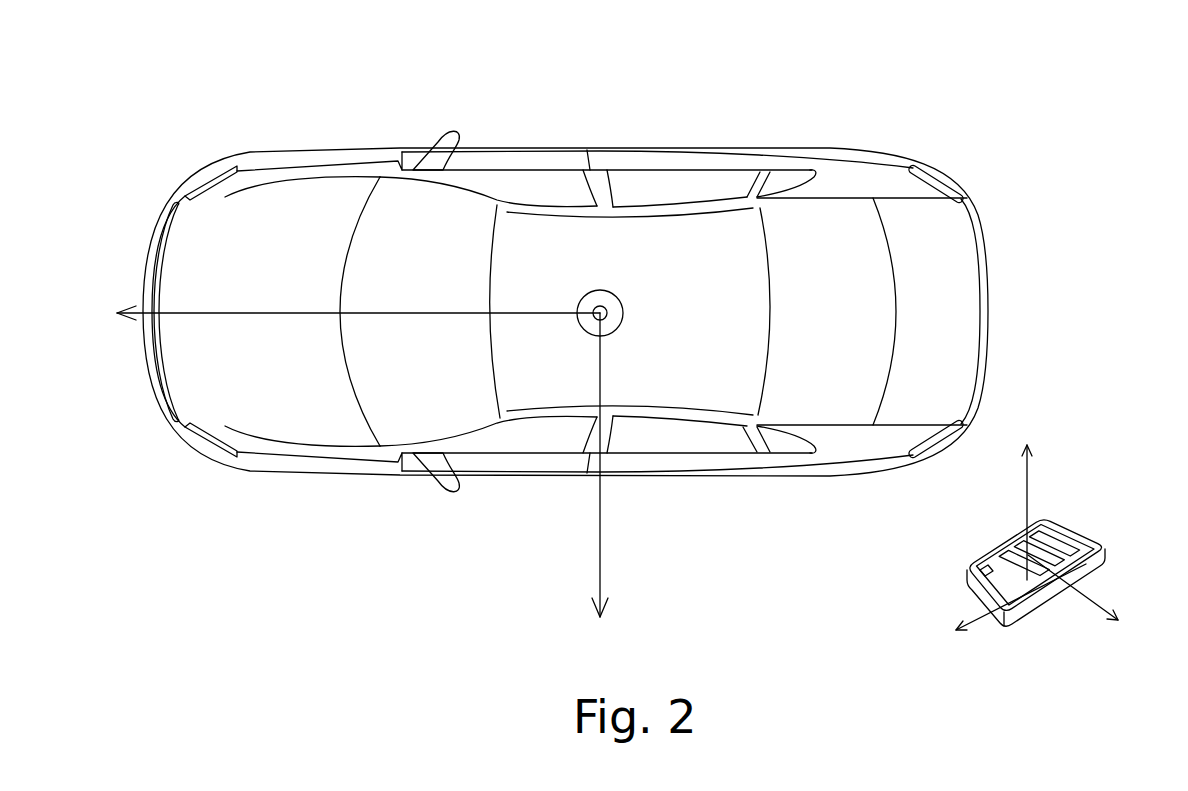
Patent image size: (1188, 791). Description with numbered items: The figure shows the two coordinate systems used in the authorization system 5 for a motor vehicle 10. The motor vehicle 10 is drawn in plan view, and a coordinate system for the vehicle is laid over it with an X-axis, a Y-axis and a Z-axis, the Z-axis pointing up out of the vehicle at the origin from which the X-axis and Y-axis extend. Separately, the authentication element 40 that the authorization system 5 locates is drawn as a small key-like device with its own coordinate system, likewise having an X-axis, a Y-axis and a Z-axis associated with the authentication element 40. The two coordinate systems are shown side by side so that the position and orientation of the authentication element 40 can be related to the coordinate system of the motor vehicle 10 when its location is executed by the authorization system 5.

The authorization system 5 is at (300, 628).
The motor vehicle 10 is at (740, 148).
The authentication element 40 is at (1082, 524).